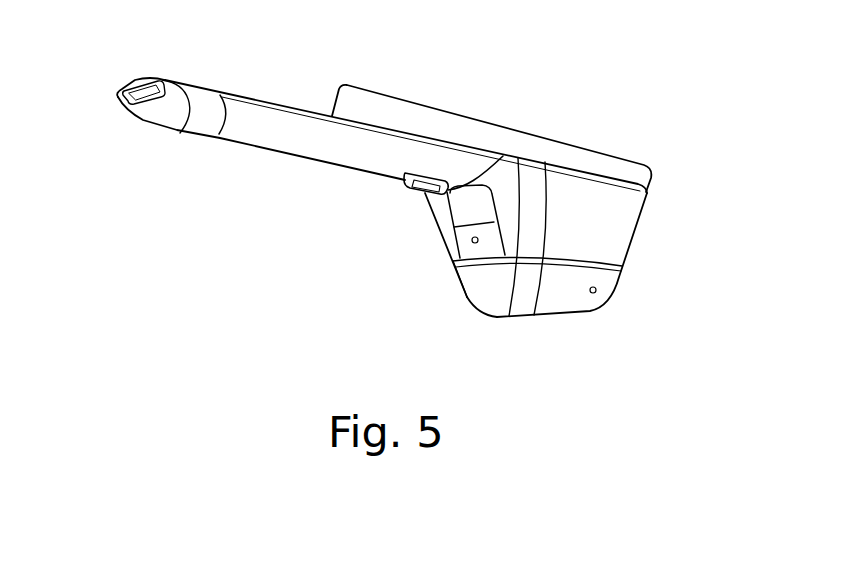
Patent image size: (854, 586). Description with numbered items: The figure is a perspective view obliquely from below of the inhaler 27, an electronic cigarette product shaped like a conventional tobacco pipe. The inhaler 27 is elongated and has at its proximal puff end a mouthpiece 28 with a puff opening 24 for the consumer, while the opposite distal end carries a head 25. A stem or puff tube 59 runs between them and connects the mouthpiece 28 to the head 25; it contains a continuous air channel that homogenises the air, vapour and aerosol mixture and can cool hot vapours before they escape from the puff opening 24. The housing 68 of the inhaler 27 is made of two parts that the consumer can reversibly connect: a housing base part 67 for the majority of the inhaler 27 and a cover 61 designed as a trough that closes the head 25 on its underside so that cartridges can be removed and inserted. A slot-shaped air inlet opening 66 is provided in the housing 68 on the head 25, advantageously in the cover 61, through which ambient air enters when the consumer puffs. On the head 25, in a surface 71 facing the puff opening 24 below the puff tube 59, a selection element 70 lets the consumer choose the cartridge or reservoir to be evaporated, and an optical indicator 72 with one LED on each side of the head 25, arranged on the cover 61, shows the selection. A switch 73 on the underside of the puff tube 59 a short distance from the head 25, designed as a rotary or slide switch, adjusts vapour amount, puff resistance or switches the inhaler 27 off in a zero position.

The puff opening 24 is at (145, 88).
The head 25 is at (512, 328).
The inhaler 27 is at (463, 108).
The mouthpiece 28 is at (188, 83).
The puff tube 59 is at (296, 103).
The cover 61 is at (568, 310).
The air inlet opening 66 is at (487, 283).
The housing base part 67 is at (527, 150).
The housing 68 is at (371, 117).
The selection element 70 is at (463, 258).
The surface 71 is at (472, 243).
The optical indicator 72 is at (600, 290).
The switch 73 is at (418, 194).